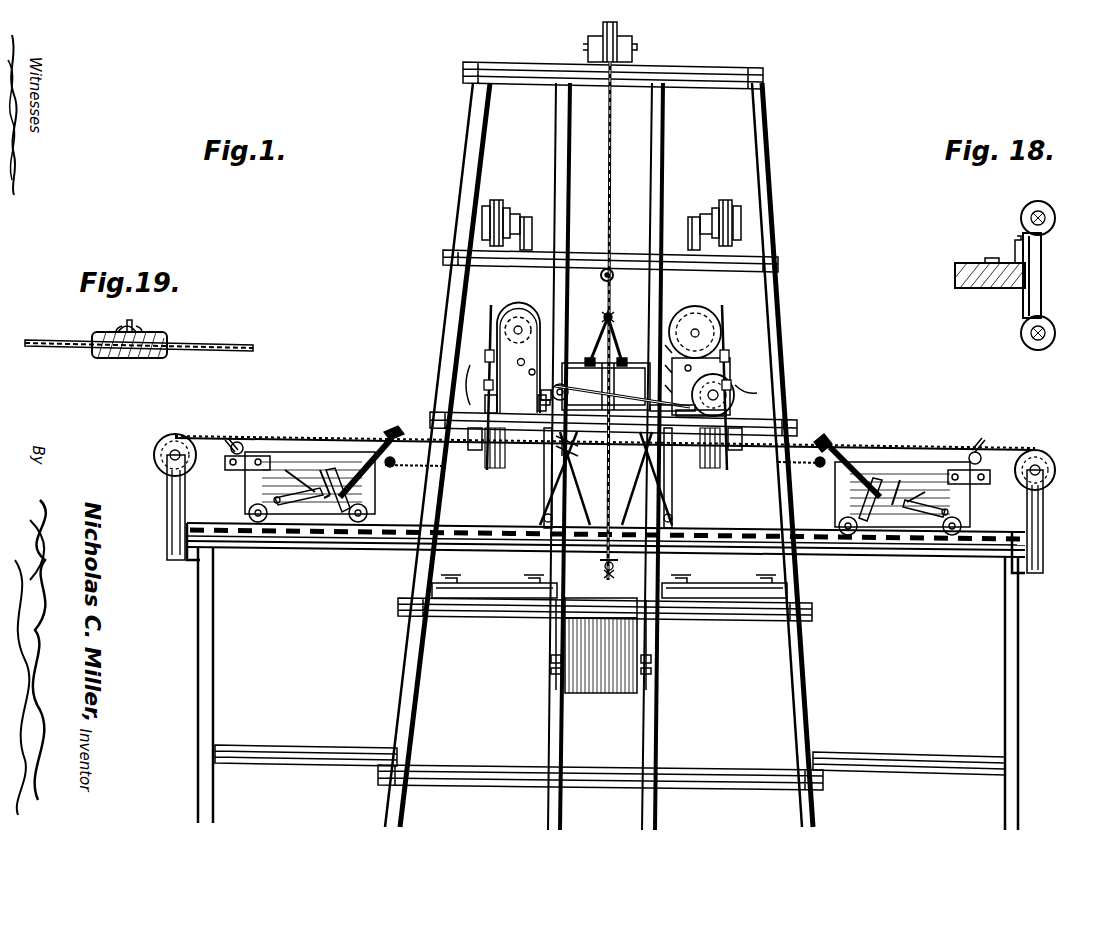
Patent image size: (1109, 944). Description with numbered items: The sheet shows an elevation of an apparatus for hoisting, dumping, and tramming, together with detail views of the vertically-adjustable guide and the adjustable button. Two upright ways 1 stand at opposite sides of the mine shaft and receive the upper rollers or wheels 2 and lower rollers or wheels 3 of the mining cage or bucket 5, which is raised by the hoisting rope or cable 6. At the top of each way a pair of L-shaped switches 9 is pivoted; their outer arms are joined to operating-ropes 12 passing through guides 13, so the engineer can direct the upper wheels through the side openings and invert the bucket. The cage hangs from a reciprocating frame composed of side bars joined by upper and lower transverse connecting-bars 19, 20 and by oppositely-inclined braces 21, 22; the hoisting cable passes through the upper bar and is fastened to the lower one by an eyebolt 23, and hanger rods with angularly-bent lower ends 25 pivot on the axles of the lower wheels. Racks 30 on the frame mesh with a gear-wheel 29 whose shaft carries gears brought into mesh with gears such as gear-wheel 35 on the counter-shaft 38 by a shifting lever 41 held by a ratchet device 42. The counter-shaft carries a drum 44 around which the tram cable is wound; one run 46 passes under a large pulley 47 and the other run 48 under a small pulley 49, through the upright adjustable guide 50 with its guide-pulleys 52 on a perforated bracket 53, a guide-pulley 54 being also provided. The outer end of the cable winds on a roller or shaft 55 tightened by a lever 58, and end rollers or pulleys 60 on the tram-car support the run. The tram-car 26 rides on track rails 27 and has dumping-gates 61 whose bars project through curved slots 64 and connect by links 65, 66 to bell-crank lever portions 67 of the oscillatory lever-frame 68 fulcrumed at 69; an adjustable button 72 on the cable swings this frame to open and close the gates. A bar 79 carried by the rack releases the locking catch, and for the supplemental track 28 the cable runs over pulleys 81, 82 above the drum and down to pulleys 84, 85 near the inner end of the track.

In FIG. 1, the upright ways 1 is at (642, 731).
In FIG. 1, the upper rollers or wheels 2 is at (556, 626).
In FIG. 1, the lower rollers or wheels 3 is at (551, 673).
In FIG. 1, the mining cage or bucket 5 is at (601, 652).
In FIG. 1, the hoisting rope or cable 6 is at (612, 214).
In FIG. 1, the L-shaped switches 9 is at (589, 359).
In FIG. 1, the operating-ropes 12 is at (614, 319).
In FIG. 1, the guides 13 is at (613, 278).
In FIG. 1, the upper transverse connecting-bar 19 is at (626, 405).
In FIG. 1, the lower transverse connecting-bar 20 is at (625, 560).
In FIG. 1, the upper inclined braces 21 is at (606, 478).
In FIG. 1, the lower inclined braces 22 is at (606, 478).
In FIG. 1, the eyebolt 23 is at (604, 560).
In FIG. 1, the angularly-bent lower ends 25 is at (551, 660).
In FIG. 1, the carriage 26 is at (375, 485).
In FIG. 1, the track rails 27 is at (932, 535).
In FIG. 1, the supplemental track 28 is at (609, 580).
In FIG. 1, the gear-wheel 29 is at (602, 368).
In FIG. 1, the racks 30 is at (544, 504).
In FIG. 1, the gear-wheel 35 is at (526, 312).
In FIG. 1, the counter-shaft 38 is at (540, 318).
In FIG. 1, the shifting lever 41 is at (731, 322).
In FIG. 1, the ratchet device 42 is at (486, 356).
In FIG. 1, the drum 44 is at (515, 316).
In FIG. 1, the run of tram rope 46 is at (418, 468).
In FIG. 1, the large pulley 47 is at (778, 385).
In FIG. 1, the run of tram rope 48 is at (322, 440).
In FIG. 19, the run of tram rope 48 is at (215, 343).
In FIG. 1, the small pulley 49 is at (728, 406).
In FIG. 1, the upright adjustable guide 50 is at (540, 409).
In FIG. 18, the upright adjustable guide 50 is at (1043, 283).
In FIG. 1, the guide-pulleys 52 is at (598, 425).
In FIG. 18, the guide-pulleys 52 is at (1052, 224).
In FIG. 1, the bracket 53 is at (541, 394).
In FIG. 18, the bracket 53 is at (1012, 255).
In FIG. 1, the guide-pulley 54 is at (672, 421).
In FIG. 1, the roller or shaft 55 is at (596, 477).
In FIG. 1, the lever 58 is at (226, 440).
In FIG. 1, the end rollers or pulleys 60 is at (240, 442).
In FIG. 1, the dumping-gates 61 is at (165, 443).
In FIG. 1, the curved slots 64 is at (882, 500).
In FIG. 1, the link 65 is at (604, 494).
In FIG. 1, the link 66 is at (600, 504).
In FIG. 1, the bell-crank lever portions 67 is at (624, 475).
In FIG. 1, the oscillatory lever-frame 68 is at (360, 470).
In FIG. 1, the fulcrum 69 is at (602, 473).
In FIG. 1, the adjustable button 72 is at (578, 450).
In FIG. 19, the adjustable button 72 is at (133, 358).
In FIG. 1, the bar 79 is at (680, 565).
In FIG. 1, the pulley 81 is at (480, 215).
In FIG. 1, the pulley 82 is at (506, 208).
In FIG. 1, the pulley 84 is at (478, 452).
In FIG. 1, the pulley 85 is at (496, 470).